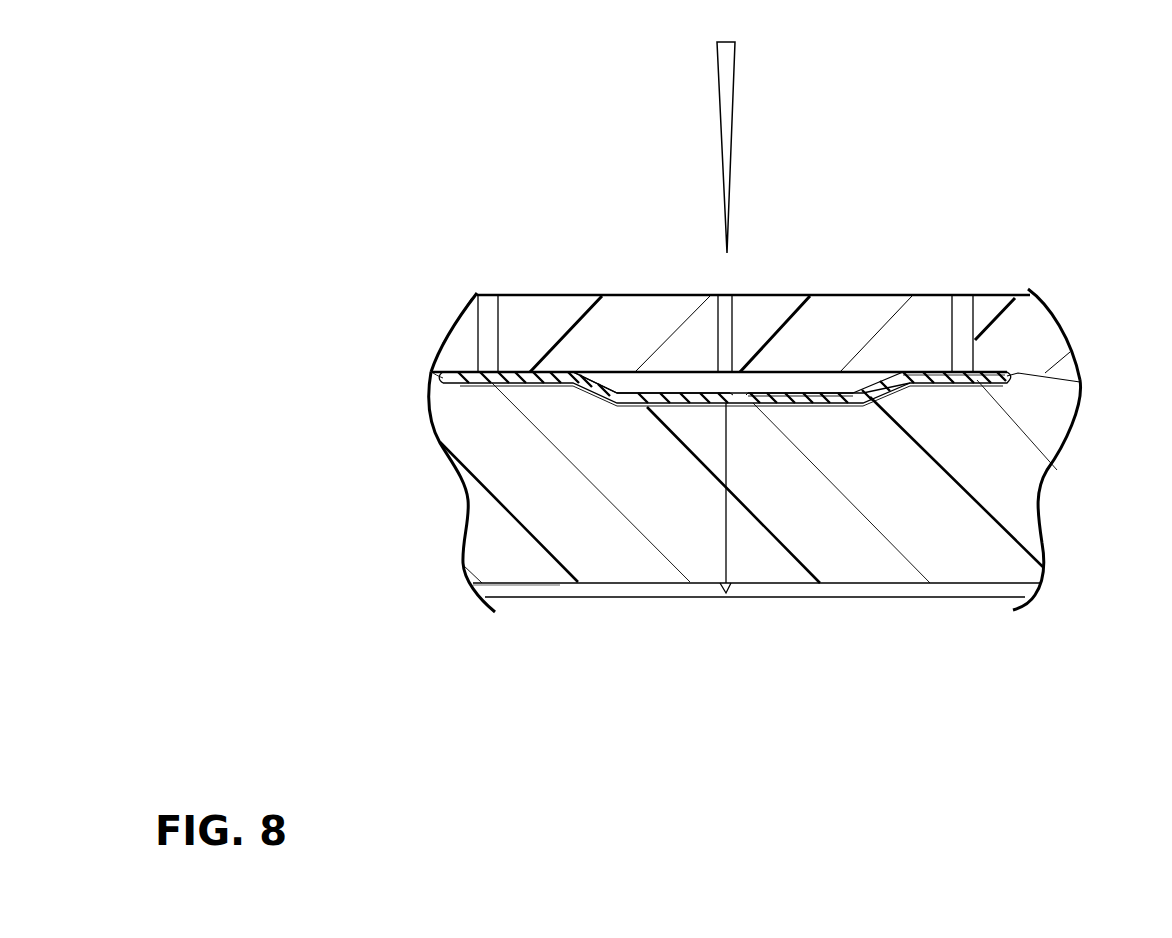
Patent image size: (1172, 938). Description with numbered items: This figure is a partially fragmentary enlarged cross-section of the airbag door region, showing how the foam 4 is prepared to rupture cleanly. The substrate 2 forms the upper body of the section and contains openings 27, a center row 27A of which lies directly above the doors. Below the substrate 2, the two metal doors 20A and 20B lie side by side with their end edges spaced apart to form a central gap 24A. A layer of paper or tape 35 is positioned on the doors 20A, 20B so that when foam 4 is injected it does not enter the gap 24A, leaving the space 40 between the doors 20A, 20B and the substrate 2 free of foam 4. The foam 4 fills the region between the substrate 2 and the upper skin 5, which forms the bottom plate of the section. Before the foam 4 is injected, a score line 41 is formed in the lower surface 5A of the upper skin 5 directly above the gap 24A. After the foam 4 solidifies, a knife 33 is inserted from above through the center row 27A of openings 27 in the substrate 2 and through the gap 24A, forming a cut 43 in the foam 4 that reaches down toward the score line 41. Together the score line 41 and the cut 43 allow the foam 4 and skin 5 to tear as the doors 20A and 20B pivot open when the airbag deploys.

The substrate 2 is at (637, 296).
The knife 33 is at (733, 108).
The openings 27 is at (488, 305).
The center row of openings 27A is at (728, 297).
The central gap 24A is at (733, 372).
The space 40 is at (800, 392).
The tape 35 is at (950, 390).
The door 20A is at (800, 403).
The door 20B is at (650, 403).
The upper skin 5 is at (522, 601).
The lower surface 5A is at (542, 583).
The foam 4 is at (623, 530).
The score line 41 is at (722, 583).
The cut 43 is at (727, 553).